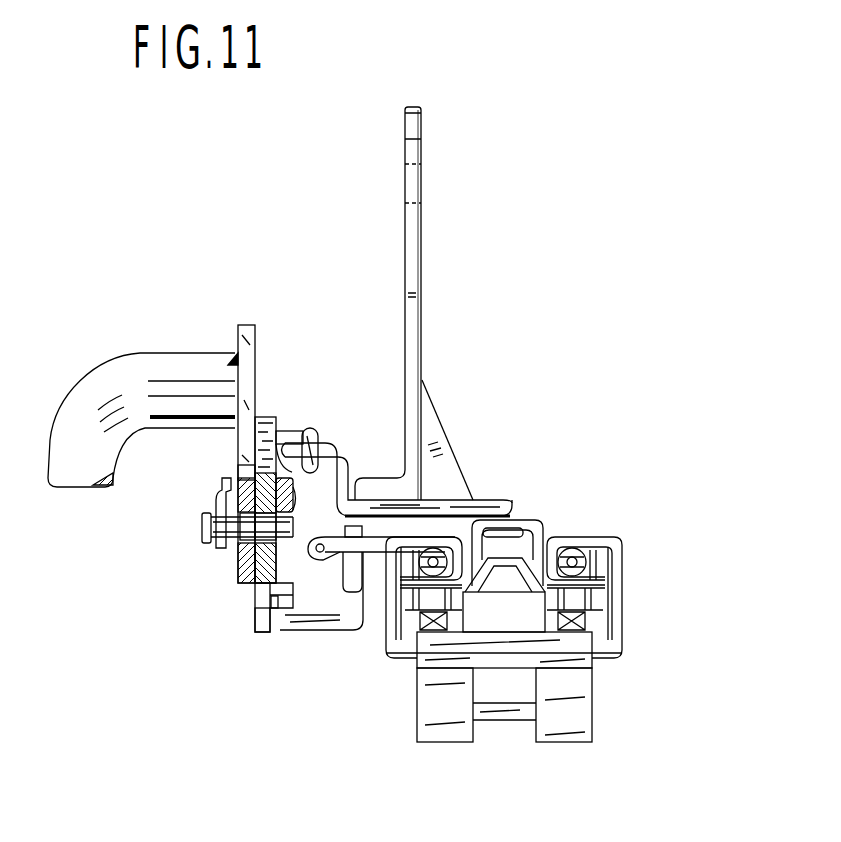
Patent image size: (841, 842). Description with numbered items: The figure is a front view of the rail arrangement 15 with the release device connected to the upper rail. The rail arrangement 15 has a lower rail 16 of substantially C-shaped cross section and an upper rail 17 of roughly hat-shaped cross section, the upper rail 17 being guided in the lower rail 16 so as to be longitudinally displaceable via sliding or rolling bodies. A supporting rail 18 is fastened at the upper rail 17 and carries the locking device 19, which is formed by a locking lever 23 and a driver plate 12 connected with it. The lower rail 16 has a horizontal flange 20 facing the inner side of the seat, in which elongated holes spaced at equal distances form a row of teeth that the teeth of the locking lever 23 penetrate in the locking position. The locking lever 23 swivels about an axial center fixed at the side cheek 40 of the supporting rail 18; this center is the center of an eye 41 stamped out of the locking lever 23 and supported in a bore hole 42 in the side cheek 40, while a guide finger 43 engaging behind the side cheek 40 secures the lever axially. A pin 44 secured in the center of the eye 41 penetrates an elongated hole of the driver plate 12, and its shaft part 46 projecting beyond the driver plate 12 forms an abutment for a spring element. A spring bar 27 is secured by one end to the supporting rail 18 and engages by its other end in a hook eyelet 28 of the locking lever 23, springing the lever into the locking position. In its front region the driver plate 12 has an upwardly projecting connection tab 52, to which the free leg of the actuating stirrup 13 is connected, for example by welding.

The driver plate 12 is at (243, 473).
The actuating stirrup 13 is at (63, 467).
The rail arrangement 15 is at (641, 563).
The lower rail 16 is at (616, 652).
The upper rail 17 is at (536, 522).
The supporting rail 18 is at (412, 474).
The locking device 19 is at (171, 565).
The horizontal flange 20 is at (333, 555).
The locking lever 23 is at (263, 617).
The spring bar 27 is at (293, 432).
The hook eyelet 28 is at (265, 415).
The side cheek 40 is at (318, 452).
The eye 41 is at (356, 480).
The bore hole 42 is at (263, 590).
The guide finger 43 is at (288, 603).
The pin 44 is at (248, 538).
The shaft part 46 is at (203, 527).
The connection tab 52 is at (240, 328).